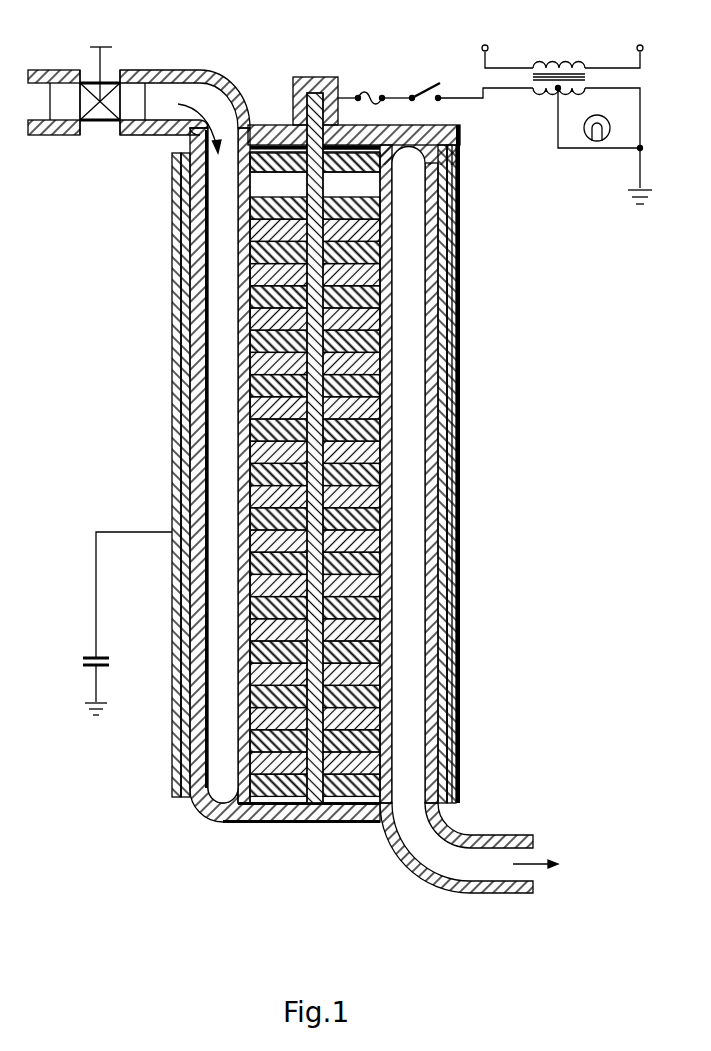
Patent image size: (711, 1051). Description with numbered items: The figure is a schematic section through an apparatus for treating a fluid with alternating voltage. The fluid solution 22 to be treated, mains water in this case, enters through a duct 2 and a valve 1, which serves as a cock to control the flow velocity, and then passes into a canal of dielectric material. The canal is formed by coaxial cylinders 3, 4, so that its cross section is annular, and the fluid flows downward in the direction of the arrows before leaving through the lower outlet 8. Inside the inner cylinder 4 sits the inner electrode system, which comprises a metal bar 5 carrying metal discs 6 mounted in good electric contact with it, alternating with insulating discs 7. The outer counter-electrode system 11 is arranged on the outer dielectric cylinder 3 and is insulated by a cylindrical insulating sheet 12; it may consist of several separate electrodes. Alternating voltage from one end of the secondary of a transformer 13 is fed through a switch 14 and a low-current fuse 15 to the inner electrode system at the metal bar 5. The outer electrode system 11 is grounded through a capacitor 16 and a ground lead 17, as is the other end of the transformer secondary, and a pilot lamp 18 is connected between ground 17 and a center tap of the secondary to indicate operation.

The valve 1 is at (104, 47).
The duct 2 is at (36, 72).
The outer dielectric cylinder 3 is at (172, 220).
The inner cylinder 4 is at (238, 256).
The metal bar 5 is at (316, 77).
The metal discs 6 is at (265, 372).
The insulating discs 7 is at (460, 357).
The lower outlet 8 is at (442, 853).
The outer counter-electrode system 11 is at (172, 312).
The cylindrical insulating sheet 12 is at (460, 397).
The transformer 13 is at (565, 76).
The switch 14 is at (430, 84).
The low-current fuse 15 is at (365, 97).
The capacitor 16 is at (83, 661).
The ground lead 17 is at (633, 205).
The pilot lamp 18 is at (586, 142).
The fluid solution 22 is at (222, 432).